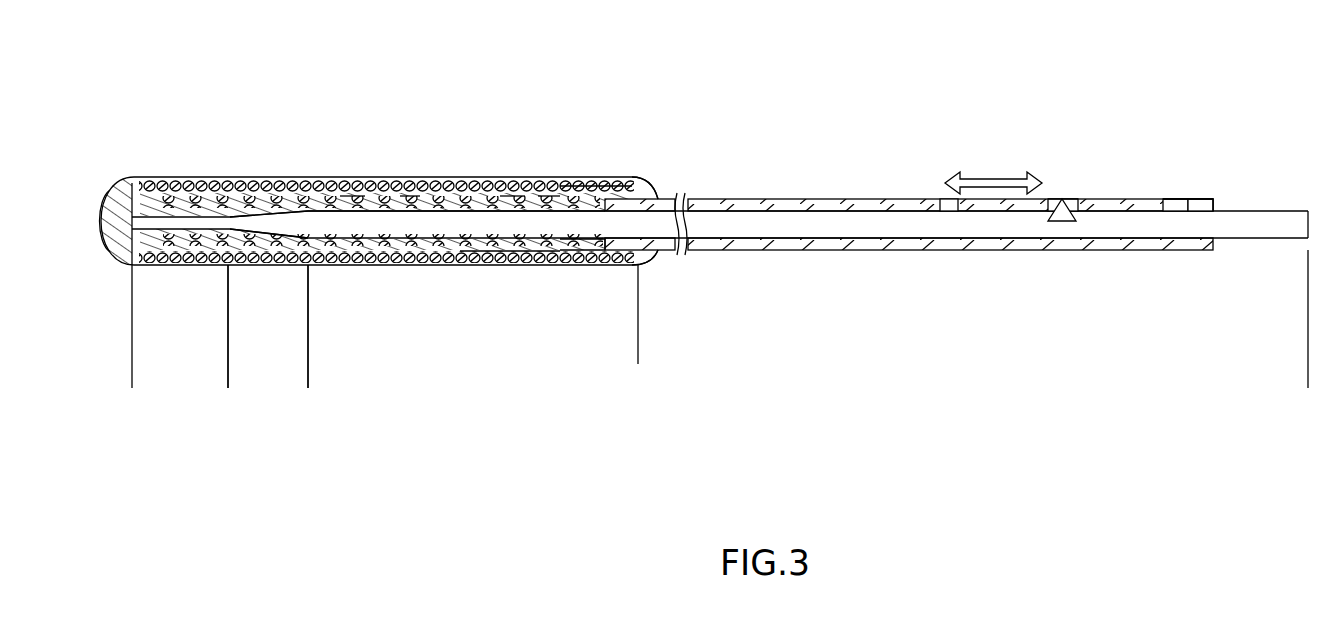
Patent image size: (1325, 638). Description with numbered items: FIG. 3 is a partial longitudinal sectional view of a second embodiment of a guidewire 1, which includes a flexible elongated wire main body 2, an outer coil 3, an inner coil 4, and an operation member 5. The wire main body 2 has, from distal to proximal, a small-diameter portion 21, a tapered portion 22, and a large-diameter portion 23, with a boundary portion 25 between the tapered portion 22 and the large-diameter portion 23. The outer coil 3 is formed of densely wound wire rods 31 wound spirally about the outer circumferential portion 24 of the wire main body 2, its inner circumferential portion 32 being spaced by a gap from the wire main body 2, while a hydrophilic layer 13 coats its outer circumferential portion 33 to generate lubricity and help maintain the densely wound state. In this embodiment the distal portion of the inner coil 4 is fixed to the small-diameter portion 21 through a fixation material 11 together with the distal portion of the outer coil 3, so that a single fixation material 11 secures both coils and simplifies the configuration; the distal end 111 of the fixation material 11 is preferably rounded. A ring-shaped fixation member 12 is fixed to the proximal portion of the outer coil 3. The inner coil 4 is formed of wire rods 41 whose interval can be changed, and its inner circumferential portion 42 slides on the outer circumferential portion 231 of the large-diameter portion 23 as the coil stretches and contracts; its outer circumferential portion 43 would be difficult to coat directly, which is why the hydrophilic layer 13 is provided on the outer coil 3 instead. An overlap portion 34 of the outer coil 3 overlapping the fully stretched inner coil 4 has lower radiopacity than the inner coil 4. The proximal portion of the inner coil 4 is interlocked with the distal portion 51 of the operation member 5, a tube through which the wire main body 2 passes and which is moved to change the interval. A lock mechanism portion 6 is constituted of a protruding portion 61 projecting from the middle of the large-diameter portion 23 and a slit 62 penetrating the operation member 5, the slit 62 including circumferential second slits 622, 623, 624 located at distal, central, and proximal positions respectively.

The guidewire 1 is at (1157, 72).
The wire main body 2 is at (815, 425).
The outer coil 3 is at (577, 177).
The inner coil 4 is at (545, 188).
The operation member 5 is at (1210, 196).
The lock mechanism portion 6 is at (1108, 146).
The fixation material 11 is at (120, 207).
The fixation member 12 is at (640, 183).
The hydrophilic layer 13 is at (598, 184).
The small-diameter portion 21 is at (132, 388).
The tapered portion 22 is at (228, 388).
The large-diameter portion 23 is at (1308, 388).
The outer circumferential portion 24 is at (507, 262).
The boundary portion 25 is at (293, 250).
The wire rods 31 is at (204, 180).
The inner circumferential portion 32 is at (265, 184).
The outer circumferential portion 33 is at (316, 188).
The overlap portion 34 is at (132, 355).
The wire rods 41 is at (360, 196).
The inner circumferential portion 42 is at (406, 201).
The outer circumferential portion 43 is at (404, 196).
The distal portion 51 is at (570, 250).
The protruding portion 61 is at (1062, 212).
The slit 62 is at (1076, 205).
The distal end 111 is at (106, 212).
The outer circumferential portion 231 is at (446, 205).
The second slit 622 is at (946, 199).
The second slit 623 is at (1056, 199).
The second slit 624 is at (1172, 199).